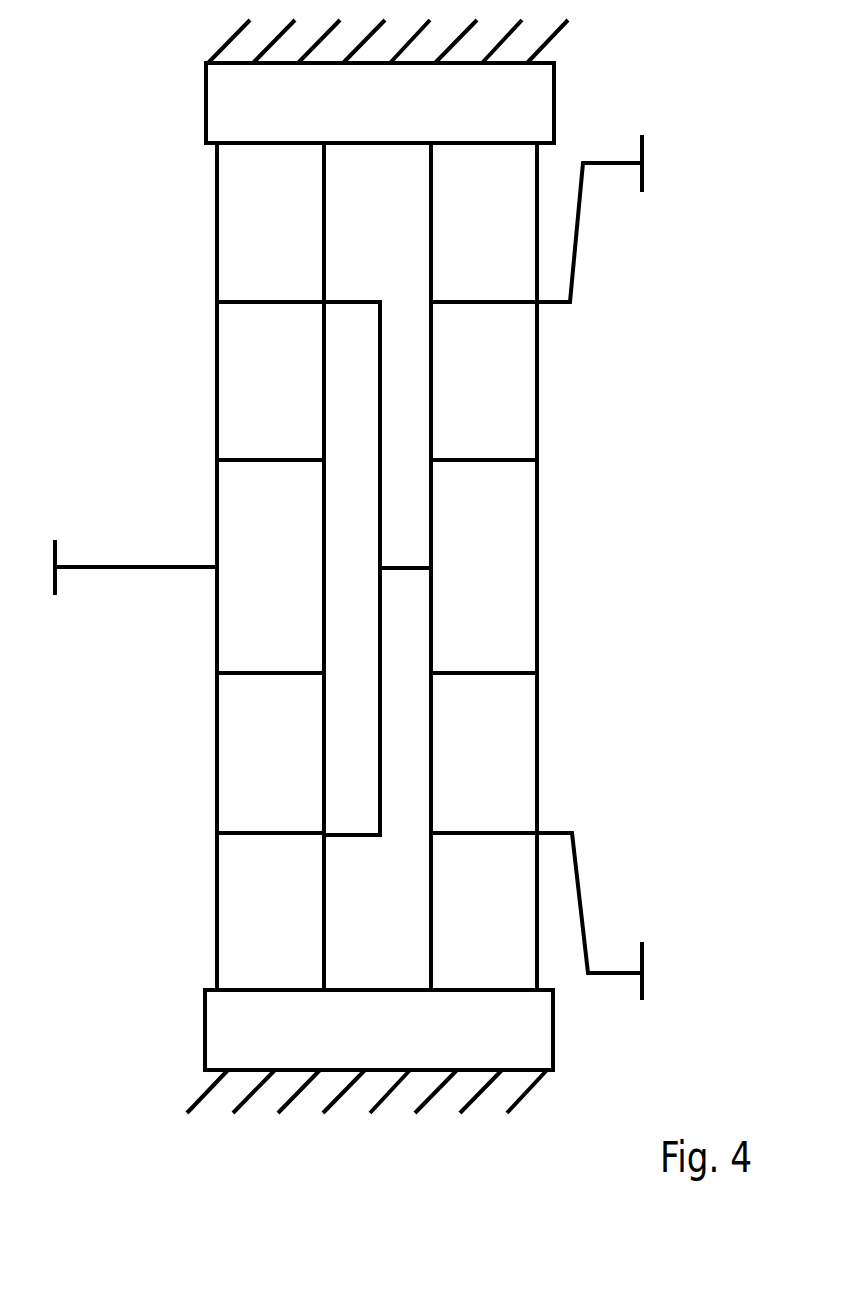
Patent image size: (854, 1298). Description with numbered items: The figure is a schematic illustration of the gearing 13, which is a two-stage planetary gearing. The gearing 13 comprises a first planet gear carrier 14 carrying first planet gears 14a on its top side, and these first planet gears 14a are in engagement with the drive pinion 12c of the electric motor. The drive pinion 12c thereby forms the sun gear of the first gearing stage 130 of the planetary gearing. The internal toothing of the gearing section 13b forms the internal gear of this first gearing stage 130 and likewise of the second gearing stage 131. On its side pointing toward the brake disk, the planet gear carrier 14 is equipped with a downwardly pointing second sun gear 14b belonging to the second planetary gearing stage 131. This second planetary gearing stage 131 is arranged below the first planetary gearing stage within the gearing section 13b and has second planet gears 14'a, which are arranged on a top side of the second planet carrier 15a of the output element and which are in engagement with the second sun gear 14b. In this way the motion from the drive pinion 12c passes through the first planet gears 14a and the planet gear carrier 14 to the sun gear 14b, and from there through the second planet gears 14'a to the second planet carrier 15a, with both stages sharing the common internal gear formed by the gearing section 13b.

The drive pinion 12c is at (253, 535).
The gearing 13 is at (370, 1145).
The gearing section 13b is at (228, 1027).
The first gearing stage 130 is at (226, 1137).
The second gearing stage 131 is at (524, 1140).
The first planet gear carrier 14 is at (244, 568).
The first planet gears 14a is at (260, 235).
The second planet gears 14'a is at (529, 567).
The second sun gear 14b is at (498, 513).
The second planet carrier 15a is at (642, 180).